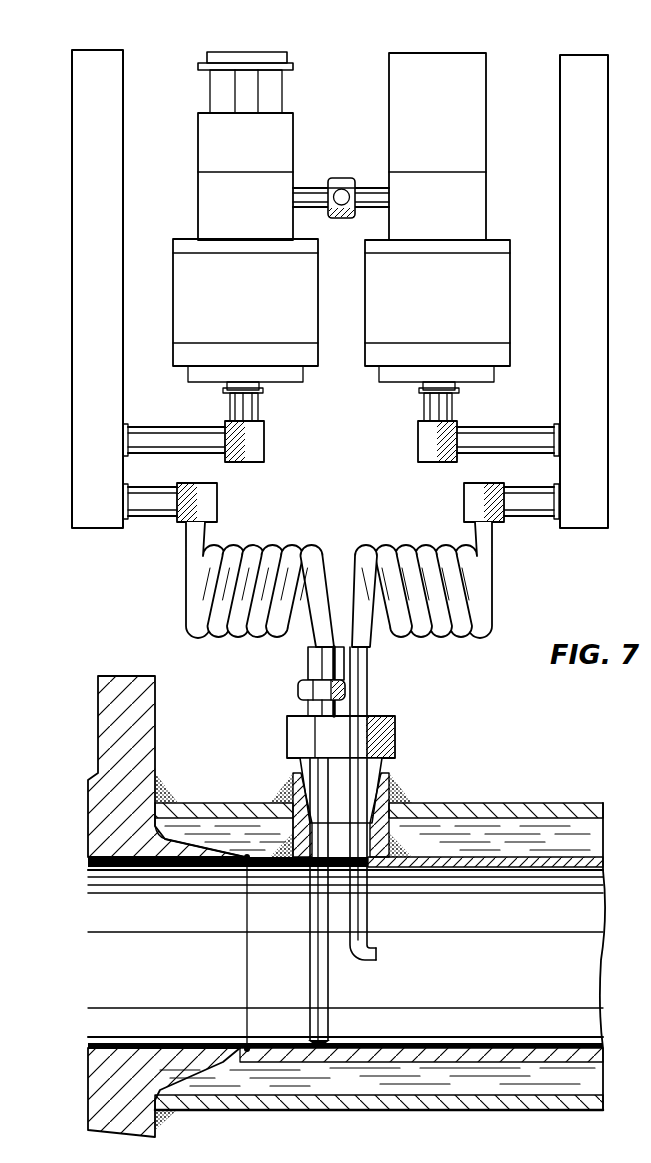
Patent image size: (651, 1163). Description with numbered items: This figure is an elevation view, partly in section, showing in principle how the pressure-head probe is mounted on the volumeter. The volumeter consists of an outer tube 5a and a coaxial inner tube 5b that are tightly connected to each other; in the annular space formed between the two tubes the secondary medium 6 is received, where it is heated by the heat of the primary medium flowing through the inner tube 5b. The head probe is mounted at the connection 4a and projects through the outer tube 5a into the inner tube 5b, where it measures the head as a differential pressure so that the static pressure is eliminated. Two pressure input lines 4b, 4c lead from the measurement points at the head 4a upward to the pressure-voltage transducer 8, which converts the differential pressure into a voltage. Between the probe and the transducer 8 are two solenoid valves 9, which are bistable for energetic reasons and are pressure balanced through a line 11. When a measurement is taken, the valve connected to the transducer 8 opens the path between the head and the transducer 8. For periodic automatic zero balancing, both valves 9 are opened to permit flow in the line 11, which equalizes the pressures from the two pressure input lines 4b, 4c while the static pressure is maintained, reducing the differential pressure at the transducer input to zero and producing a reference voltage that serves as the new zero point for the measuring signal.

The pressure-voltage transducer 8 is at (278, 61).
The line 11 is at (314, 182).
The solenoid valves 9 is at (367, 323).
The connection 4a is at (358, 732).
The secondary medium 6 is at (228, 832).
The outer tube 5a is at (503, 807).
The inner tube 5b is at (517, 872).
The pressure input line 4b is at (372, 957).
The pressure input line 4c is at (340, 992).